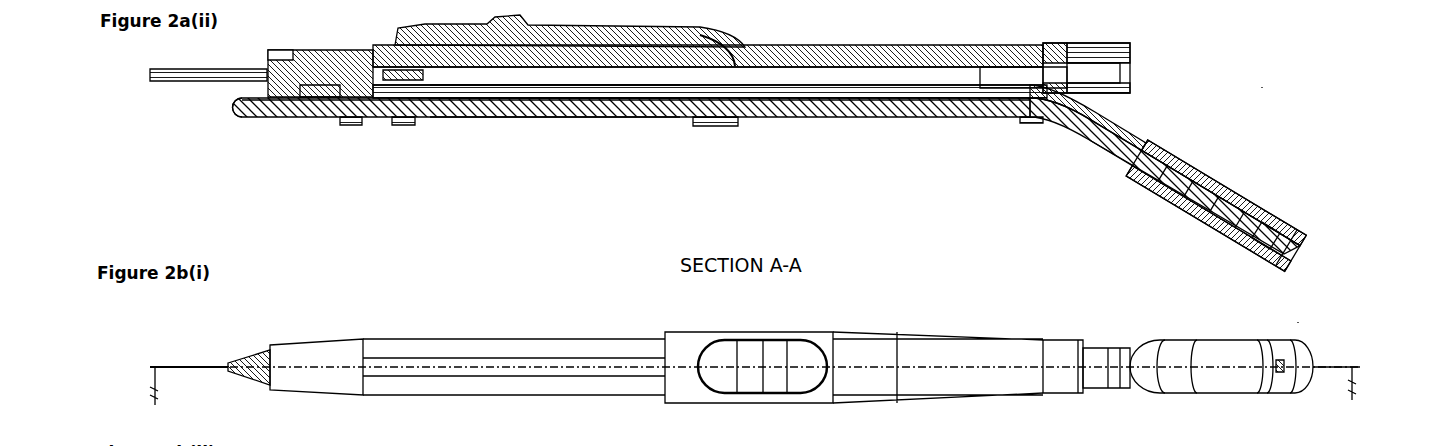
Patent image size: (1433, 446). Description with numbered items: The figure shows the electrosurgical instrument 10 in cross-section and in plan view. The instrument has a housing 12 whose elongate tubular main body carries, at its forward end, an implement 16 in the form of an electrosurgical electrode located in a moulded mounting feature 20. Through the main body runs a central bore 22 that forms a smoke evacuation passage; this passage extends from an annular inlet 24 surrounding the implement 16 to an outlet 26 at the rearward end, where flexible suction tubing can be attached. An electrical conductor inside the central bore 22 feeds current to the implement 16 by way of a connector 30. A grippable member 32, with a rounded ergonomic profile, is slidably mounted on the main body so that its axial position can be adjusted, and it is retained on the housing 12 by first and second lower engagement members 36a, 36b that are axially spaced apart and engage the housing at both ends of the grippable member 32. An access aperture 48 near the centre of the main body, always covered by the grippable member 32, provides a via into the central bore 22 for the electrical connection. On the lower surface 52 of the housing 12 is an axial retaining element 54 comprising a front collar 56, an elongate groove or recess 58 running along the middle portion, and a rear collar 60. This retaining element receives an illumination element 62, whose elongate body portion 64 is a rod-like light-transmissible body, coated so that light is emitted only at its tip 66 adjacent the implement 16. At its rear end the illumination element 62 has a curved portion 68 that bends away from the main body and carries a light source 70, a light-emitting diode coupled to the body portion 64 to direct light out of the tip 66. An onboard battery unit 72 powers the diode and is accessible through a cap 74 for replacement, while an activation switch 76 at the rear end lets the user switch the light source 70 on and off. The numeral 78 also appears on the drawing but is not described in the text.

In FIG. 2A, the electrosurgical instrument 10 is at (1265, 85).
In FIG. 2B, the electrosurgical instrument 10 is at (1302, 320).
In FIG. 2B, the housing 12 is at (418, 323).
In FIG. 2A, the implement 16 is at (148, 76).
In FIG. 2B, the implement 16 is at (148, 367).
In FIG. 2A, the mounting feature 20 is at (325, 92).
In FIG. 2A, the central bore 22 is at (708, 68).
In FIG. 2A, the inlet 24 is at (264, 88).
In FIG. 2A, the outlet 26 is at (1135, 67).
In FIG. 2A, the connector 30 is at (420, 87).
In FIG. 2B, the grippable member 32 is at (915, 337).
In FIG. 2A, the first lower engagement member 36a is at (405, 125).
In FIG. 2A, the second lower engagement member 36b is at (713, 127).
In FIG. 2A, the access aperture 48 is at (714, 62).
In FIG. 2A, the lower surface 52 is at (800, 105).
In FIG. 2A, the axial retaining element 54 is at (573, 107).
In FIG. 2A, the front collar 56 is at (353, 124).
In FIG. 2A, the elongate groove or recess 58 is at (646, 128).
In FIG. 2A, the rear collar 60 is at (1024, 120).
In FIG. 2A, the illumination element 62 is at (1315, 180).
In FIG. 2B, the illumination element 62 is at (1333, 352).
In FIG. 2A, the elongate body portion 64 is at (530, 115).
In FIG. 2A, the tip 66 is at (226, 114).
In FIG. 2A, the curved portion 68 is at (1090, 112).
In FIG. 2A, the light source 70 is at (1175, 171).
In FIG. 2A, the battery unit 72 is at (1264, 229).
In FIG. 2A, the cap 74 is at (1314, 237).
In FIG. 2B, the activation switch 76 is at (1280, 364).
In FIG. 2A, the sheath wall 78 is at (1126, 165).